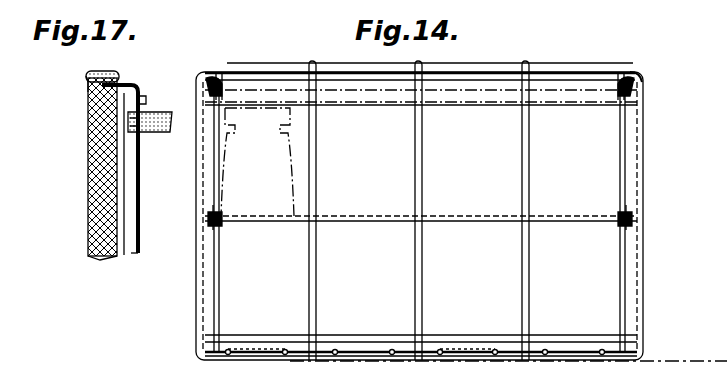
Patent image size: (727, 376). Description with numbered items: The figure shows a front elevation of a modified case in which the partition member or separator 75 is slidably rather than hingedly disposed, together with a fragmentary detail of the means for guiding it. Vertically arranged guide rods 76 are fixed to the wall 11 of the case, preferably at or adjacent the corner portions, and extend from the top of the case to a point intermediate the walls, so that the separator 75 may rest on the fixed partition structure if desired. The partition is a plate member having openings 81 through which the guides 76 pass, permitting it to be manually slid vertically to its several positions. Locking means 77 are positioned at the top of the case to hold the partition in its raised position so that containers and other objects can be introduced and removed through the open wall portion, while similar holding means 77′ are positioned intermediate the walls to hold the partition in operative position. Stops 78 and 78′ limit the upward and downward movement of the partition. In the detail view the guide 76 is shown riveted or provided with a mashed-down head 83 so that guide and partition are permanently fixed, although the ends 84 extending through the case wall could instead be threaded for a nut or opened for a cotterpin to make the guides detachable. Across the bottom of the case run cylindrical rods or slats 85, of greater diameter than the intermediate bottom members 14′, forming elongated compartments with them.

In FIG. 17, the wall panel 11 is at (90, 197).
In FIG. 14, the bottom members 14′ is at (285, 349).
In FIG. 17, the vertically sliding partition or separator 75 is at (160, 112).
In FIG. 14, the vertically sliding partition or separator 75 is at (376, 95).
In FIG. 17, the guide rods 76 is at (136, 164).
In FIG. 14, the guide rods 76 is at (216, 166).
In FIG. 14, the locking means 77 is at (226, 88).
In FIG. 14, the holding means 77′ is at (205, 215).
In FIG. 17, the stops 78 is at (143, 98).
In FIG. 14, the stops 78 is at (216, 80).
In FIG. 14, the stops 78′ is at (220, 226).
In FIG. 17, the openings 81 is at (140, 128).
In FIG. 17, the mashed-down head 83 is at (87, 85).
In FIG. 17, the ends 84 is at (90, 72).
In FIG. 14, the ends 84 is at (640, 74).
In FIG. 14, the cylindrical rods or slats 85 is at (322, 351).